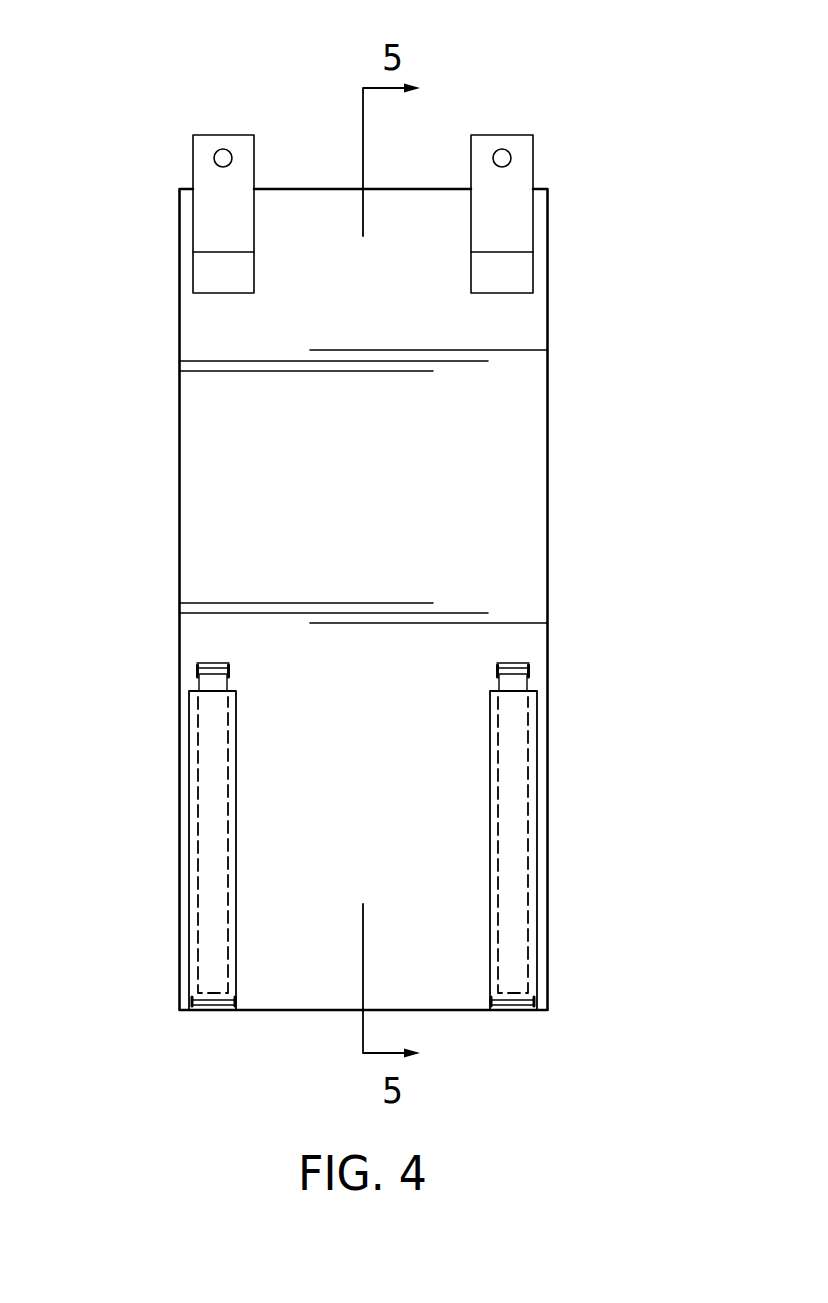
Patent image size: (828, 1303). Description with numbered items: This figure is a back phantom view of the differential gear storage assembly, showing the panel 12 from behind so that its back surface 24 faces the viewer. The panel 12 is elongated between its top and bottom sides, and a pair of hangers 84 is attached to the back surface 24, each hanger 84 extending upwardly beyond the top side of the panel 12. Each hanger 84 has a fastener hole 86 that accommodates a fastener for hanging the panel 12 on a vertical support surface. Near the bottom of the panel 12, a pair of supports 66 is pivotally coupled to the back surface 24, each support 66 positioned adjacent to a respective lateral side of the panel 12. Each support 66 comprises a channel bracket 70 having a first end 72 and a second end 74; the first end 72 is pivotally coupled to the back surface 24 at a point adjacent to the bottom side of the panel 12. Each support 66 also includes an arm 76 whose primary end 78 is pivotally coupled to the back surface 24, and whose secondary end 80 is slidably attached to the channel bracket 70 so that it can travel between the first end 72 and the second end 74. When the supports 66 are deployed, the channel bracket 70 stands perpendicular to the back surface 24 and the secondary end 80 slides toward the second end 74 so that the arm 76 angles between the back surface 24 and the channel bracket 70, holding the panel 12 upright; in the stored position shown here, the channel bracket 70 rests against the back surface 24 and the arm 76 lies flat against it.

The panel 12 is at (640, 408).
The back surface 24 is at (232, 497).
The support 66 is at (372, 820).
The channel bracket 70 is at (195, 792).
The first end 72 is at (212, 1003).
The second end 74 is at (198, 691).
The arm 76 is at (527, 687).
The primary end 78 is at (527, 663).
The secondary end 80 is at (513, 1003).
The hanger 84 is at (355, 150).
The fastener hole 86 is at (223, 126).